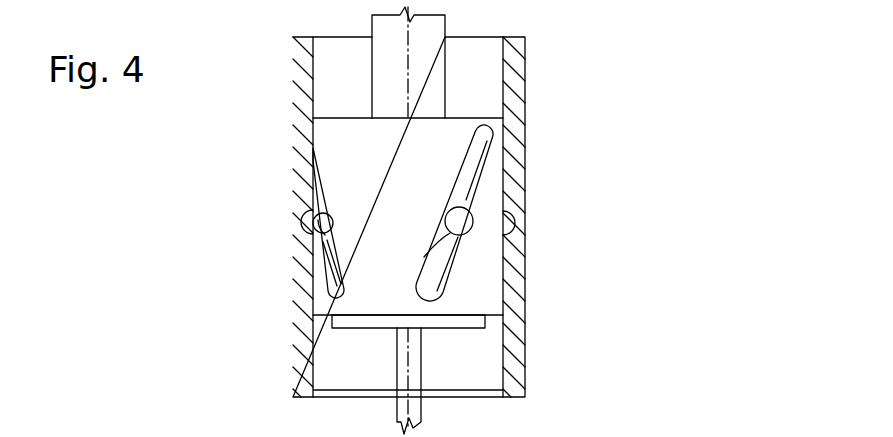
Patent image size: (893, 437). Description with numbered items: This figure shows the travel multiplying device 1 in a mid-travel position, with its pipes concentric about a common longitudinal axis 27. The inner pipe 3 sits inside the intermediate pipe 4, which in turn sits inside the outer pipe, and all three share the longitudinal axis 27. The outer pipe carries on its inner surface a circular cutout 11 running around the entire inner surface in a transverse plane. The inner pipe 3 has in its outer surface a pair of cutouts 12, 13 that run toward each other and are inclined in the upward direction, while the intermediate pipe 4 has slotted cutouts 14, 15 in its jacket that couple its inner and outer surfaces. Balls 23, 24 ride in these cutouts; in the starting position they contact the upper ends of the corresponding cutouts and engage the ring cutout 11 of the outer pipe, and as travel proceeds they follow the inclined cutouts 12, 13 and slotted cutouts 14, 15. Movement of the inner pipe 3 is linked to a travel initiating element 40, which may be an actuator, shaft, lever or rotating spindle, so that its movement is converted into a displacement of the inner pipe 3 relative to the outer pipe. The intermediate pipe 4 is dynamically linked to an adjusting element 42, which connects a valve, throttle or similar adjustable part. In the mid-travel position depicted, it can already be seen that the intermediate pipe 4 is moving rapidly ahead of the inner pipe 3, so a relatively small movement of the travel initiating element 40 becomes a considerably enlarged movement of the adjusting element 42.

The travel multiplying device 1 is at (576, 65).
The inner pipe 3 is at (487, 321).
The intermediate pipe 4 is at (350, 143).
The cutout 11 is at (514, 222).
The cutout 12 is at (320, 247).
The cutout 13 is at (468, 171).
The slotted cutout 14 is at (333, 280).
The slotted cutout 15 is at (437, 270).
The ball 23 is at (318, 218).
The ball 24 is at (462, 223).
The longitudinal axis 27 is at (408, 358).
The travel initiating element 40 is at (397, 408).
The adjusting element 42 is at (446, 26).